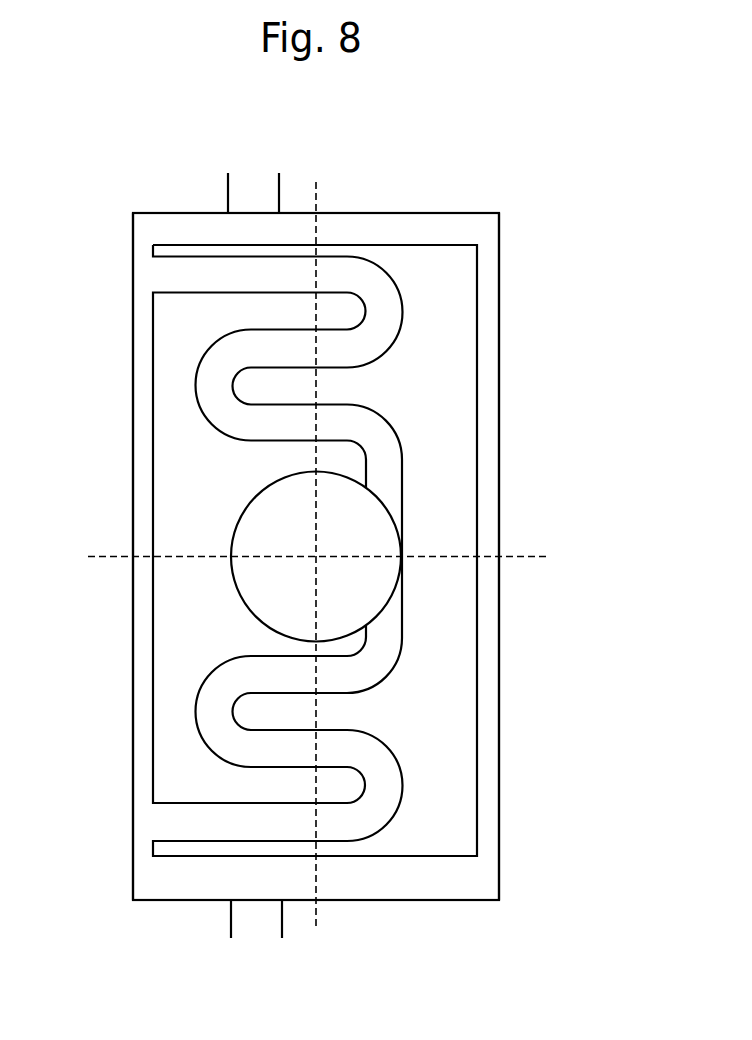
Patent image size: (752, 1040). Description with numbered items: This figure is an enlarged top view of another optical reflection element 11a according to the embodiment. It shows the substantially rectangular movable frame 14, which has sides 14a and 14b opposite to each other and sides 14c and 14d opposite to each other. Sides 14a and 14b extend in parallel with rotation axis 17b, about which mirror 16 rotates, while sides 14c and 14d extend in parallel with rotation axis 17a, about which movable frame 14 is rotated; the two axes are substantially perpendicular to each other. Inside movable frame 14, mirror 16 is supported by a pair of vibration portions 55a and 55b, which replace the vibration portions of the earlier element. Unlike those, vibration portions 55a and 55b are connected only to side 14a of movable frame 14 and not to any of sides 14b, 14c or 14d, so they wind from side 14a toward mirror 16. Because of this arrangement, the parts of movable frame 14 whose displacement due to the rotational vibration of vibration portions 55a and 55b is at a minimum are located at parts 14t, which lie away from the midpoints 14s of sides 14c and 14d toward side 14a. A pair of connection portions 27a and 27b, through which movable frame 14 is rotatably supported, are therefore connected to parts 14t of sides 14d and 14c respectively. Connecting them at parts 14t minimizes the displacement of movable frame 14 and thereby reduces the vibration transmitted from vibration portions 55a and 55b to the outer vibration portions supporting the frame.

The optical reflection element 11a is at (568, 200).
The movable frame 14 is at (483, 658).
The side 14a is at (142, 747).
The side 14b is at (488, 816).
The side 14c is at (408, 228).
The side 14d is at (433, 883).
The midpoint 14s is at (317, 218).
The part 14t is at (250, 217).
The mirror 16 is at (360, 512).
The rotation axis 17a is at (517, 557).
The rotation axis 17b is at (318, 910).
The connection portion 27a is at (240, 925).
The connection portion 27b is at (233, 195).
The vibration portion 55a is at (390, 316).
The vibration portion 55b is at (392, 783).